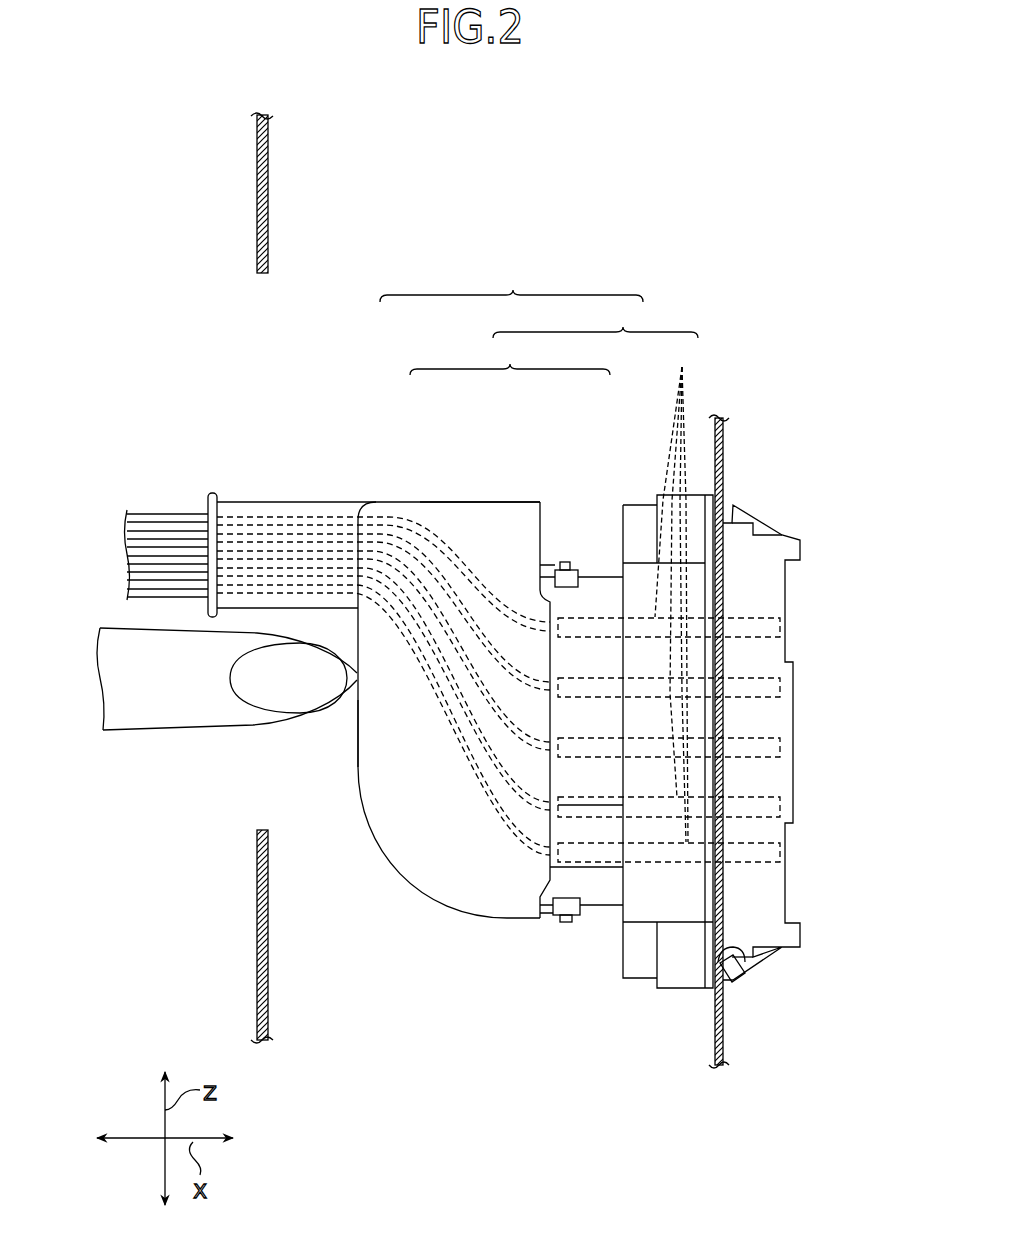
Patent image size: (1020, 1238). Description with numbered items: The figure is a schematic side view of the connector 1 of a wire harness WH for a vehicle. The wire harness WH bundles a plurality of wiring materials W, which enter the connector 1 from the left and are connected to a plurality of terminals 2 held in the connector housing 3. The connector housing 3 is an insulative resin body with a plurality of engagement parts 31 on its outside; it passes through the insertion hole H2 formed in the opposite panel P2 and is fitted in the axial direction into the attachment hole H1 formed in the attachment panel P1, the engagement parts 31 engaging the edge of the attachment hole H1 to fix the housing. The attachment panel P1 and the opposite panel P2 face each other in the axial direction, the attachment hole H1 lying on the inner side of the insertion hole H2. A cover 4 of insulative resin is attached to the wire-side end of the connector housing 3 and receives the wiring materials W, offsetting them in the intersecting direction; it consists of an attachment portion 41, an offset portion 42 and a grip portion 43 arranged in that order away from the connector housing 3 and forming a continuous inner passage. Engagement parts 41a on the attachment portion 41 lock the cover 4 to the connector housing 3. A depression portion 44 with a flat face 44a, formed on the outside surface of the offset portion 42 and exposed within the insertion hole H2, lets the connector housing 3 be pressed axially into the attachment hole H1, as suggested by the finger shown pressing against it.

The wire harness WH is at (511, 285).
The wiring material W is at (175, 511).
The connector 1 is at (595, 320).
The terminal 2 is at (684, 665).
The connector housing 3 is at (605, 563).
The cover 4 is at (413, 422).
The attachment portion 41 is at (546, 492).
The engagement part 41a is at (566, 568).
The offset portion 42 is at (489, 487).
The grip portion 43 is at (356, 643).
The depression portion 44 is at (289, 499).
The flat face 44a is at (356, 733).
The engagement part 31 is at (736, 493).
The attachment panel P1 is at (727, 463).
The opposite panel P2 is at (272, 177).
The attachment hole H1 is at (732, 962).
The insertion hole H2 is at (262, 828).